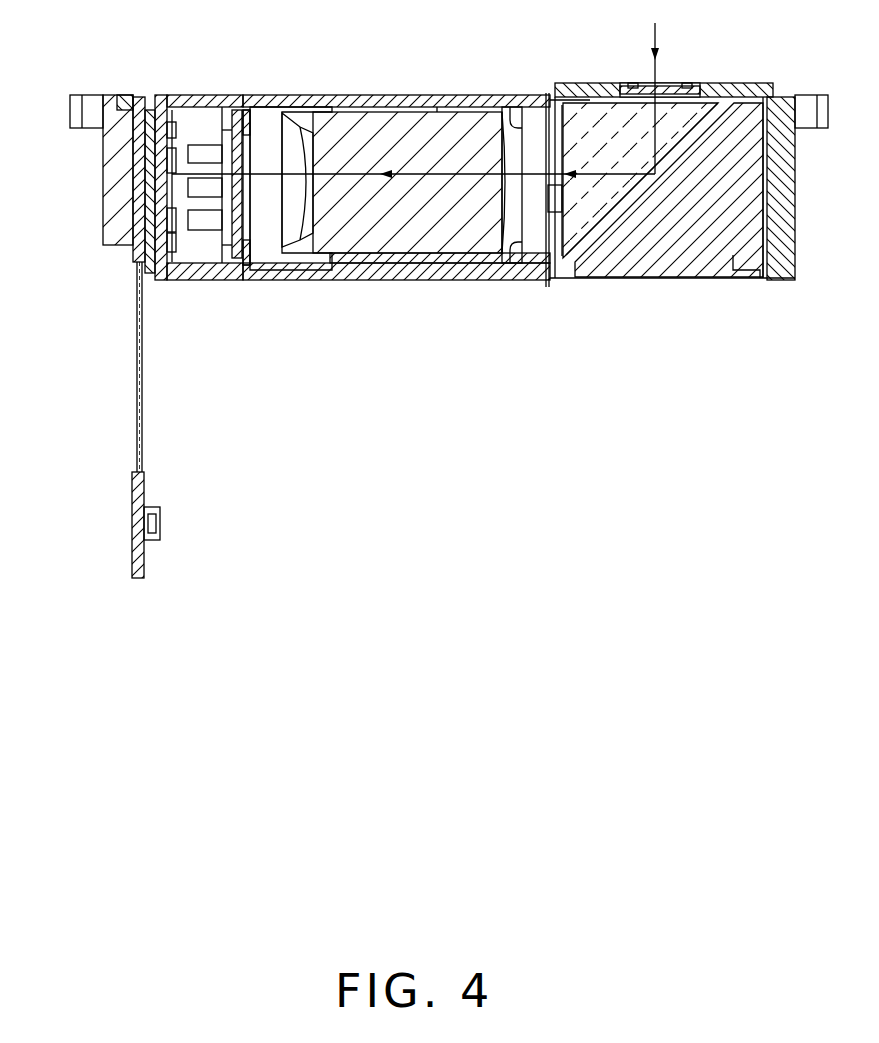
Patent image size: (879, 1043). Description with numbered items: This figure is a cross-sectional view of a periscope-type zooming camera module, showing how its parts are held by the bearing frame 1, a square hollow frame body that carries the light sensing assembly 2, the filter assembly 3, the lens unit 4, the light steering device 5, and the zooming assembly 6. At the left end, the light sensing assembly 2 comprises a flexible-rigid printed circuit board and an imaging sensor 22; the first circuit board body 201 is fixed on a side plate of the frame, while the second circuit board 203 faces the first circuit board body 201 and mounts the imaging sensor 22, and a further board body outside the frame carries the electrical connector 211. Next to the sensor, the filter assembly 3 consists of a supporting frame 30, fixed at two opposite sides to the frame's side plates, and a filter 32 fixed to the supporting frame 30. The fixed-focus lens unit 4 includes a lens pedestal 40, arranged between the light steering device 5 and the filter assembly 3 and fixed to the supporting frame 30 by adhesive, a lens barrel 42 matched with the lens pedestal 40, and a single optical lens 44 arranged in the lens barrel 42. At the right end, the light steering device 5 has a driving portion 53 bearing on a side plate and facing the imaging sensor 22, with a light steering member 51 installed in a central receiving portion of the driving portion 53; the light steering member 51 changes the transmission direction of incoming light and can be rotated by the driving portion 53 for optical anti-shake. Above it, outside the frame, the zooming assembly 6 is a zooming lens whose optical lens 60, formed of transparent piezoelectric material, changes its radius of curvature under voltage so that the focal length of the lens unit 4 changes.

The bearing frame 1 is at (115, 222).
The light sensing assembly 2 is at (127, 337).
The first circuit board body 201 is at (137, 155).
The second circuit board 203 is at (137, 262).
The electrical connector 211 is at (162, 527).
The imaging sensor 22 is at (158, 97).
The filter assembly 3 is at (225, 142).
The supporting frame 30 is at (213, 97).
The filter 32 is at (245, 115).
The lens unit 4 is at (396, 243).
The lens pedestal 40 is at (470, 272).
The lens barrel 42 is at (408, 225).
The optical lens 44 is at (343, 193).
The light steering device 5 is at (663, 248).
The light steering member 51 is at (598, 210).
The driving portion 53 is at (687, 250).
The zooming assembly 6 is at (752, 83).
The optical lens 60 is at (683, 83).